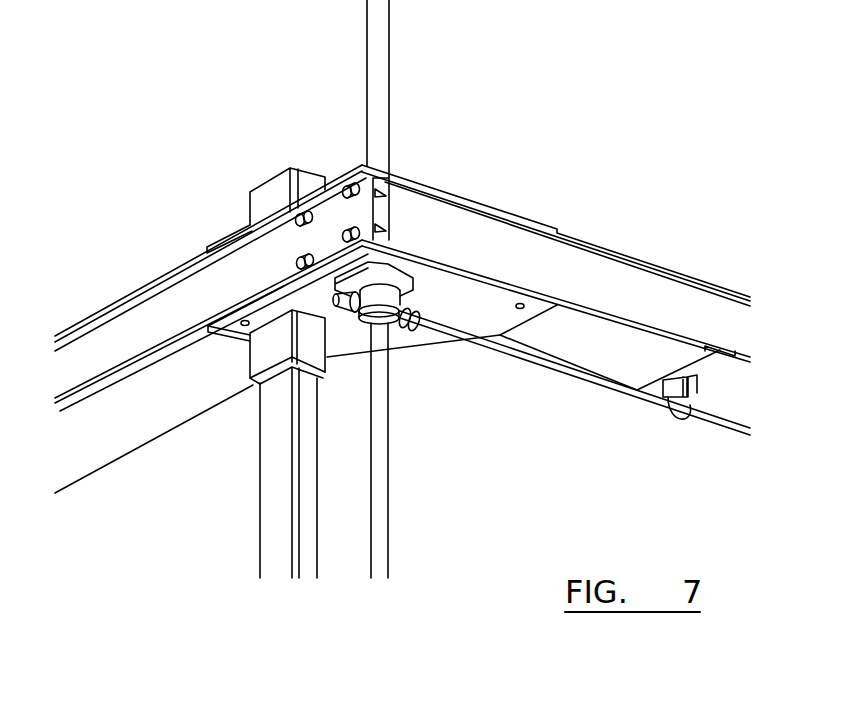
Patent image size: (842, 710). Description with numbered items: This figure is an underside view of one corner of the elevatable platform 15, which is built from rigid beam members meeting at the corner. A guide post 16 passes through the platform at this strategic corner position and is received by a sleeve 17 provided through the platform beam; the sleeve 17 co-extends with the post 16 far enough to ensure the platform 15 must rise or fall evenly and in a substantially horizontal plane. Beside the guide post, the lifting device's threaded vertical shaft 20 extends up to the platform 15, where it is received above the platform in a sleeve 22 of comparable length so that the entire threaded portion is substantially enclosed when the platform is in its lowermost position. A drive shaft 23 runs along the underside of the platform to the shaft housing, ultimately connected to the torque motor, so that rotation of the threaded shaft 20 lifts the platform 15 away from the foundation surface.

The elevatable platform 15 is at (653, 298).
The guide post 16 is at (280, 470).
The sleeve 17 is at (273, 190).
The threaded vertical shaft 20 is at (378, 492).
The sleeve 22 is at (378, 93).
The drive shaft 23 is at (587, 378).